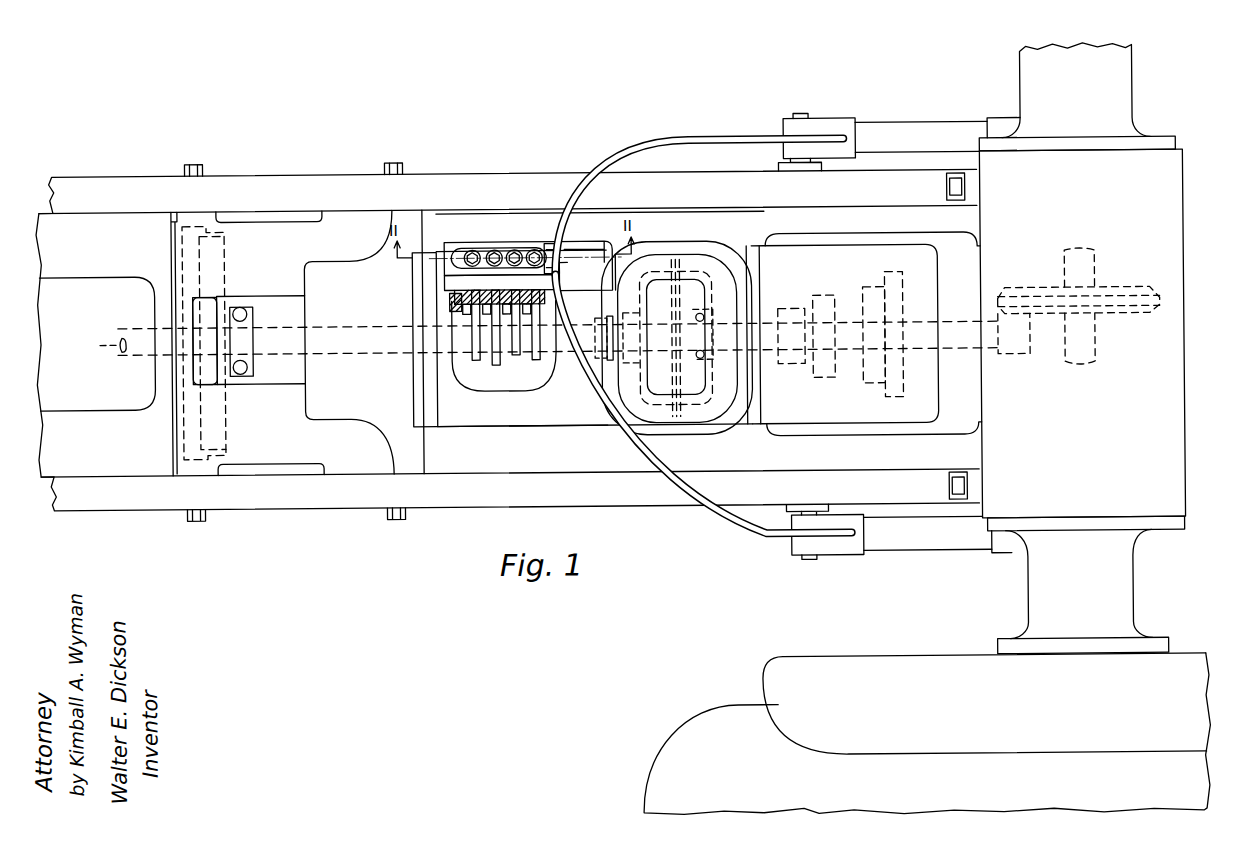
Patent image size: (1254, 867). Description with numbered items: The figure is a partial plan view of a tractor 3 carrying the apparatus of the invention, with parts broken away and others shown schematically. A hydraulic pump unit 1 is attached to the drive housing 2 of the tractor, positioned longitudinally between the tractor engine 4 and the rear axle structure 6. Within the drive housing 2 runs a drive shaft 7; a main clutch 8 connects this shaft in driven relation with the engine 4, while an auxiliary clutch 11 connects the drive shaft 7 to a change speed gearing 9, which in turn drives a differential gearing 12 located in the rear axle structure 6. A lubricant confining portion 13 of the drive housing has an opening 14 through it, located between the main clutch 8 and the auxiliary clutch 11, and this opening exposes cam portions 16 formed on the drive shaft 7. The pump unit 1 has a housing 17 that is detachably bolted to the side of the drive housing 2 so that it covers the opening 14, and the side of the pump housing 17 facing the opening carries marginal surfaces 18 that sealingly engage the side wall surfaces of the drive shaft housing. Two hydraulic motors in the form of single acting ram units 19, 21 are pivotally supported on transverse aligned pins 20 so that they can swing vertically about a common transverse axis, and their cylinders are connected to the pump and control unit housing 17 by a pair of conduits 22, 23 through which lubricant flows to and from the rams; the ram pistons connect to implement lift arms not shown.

The hydraulic pump unit 1 is at (509, 288).
The drive housing 2 is at (567, 414).
The tractor 3 is at (249, 176).
The tractor engine 4 is at (102, 381).
The rear axle structure 6 is at (1132, 394).
The drive shaft 7 is at (388, 358).
The main clutch 8 is at (228, 432).
The change speed gearing 9 is at (829, 391).
The auxiliary clutch 11 is at (646, 378).
The differential gearing 12 is at (1050, 289).
The lubricant confining portion 13 is at (508, 427).
The opening 14 is at (468, 308).
The cam portions 16 is at (497, 358).
The pump housing 17 is at (461, 246).
The marginal surfaces 18 is at (457, 300).
The ram unit 19 is at (928, 125).
The transverse aligned pins 20 is at (806, 109).
The ram unit 21 is at (921, 552).
The conduit 22 is at (703, 139).
The conduit 23 is at (724, 523).